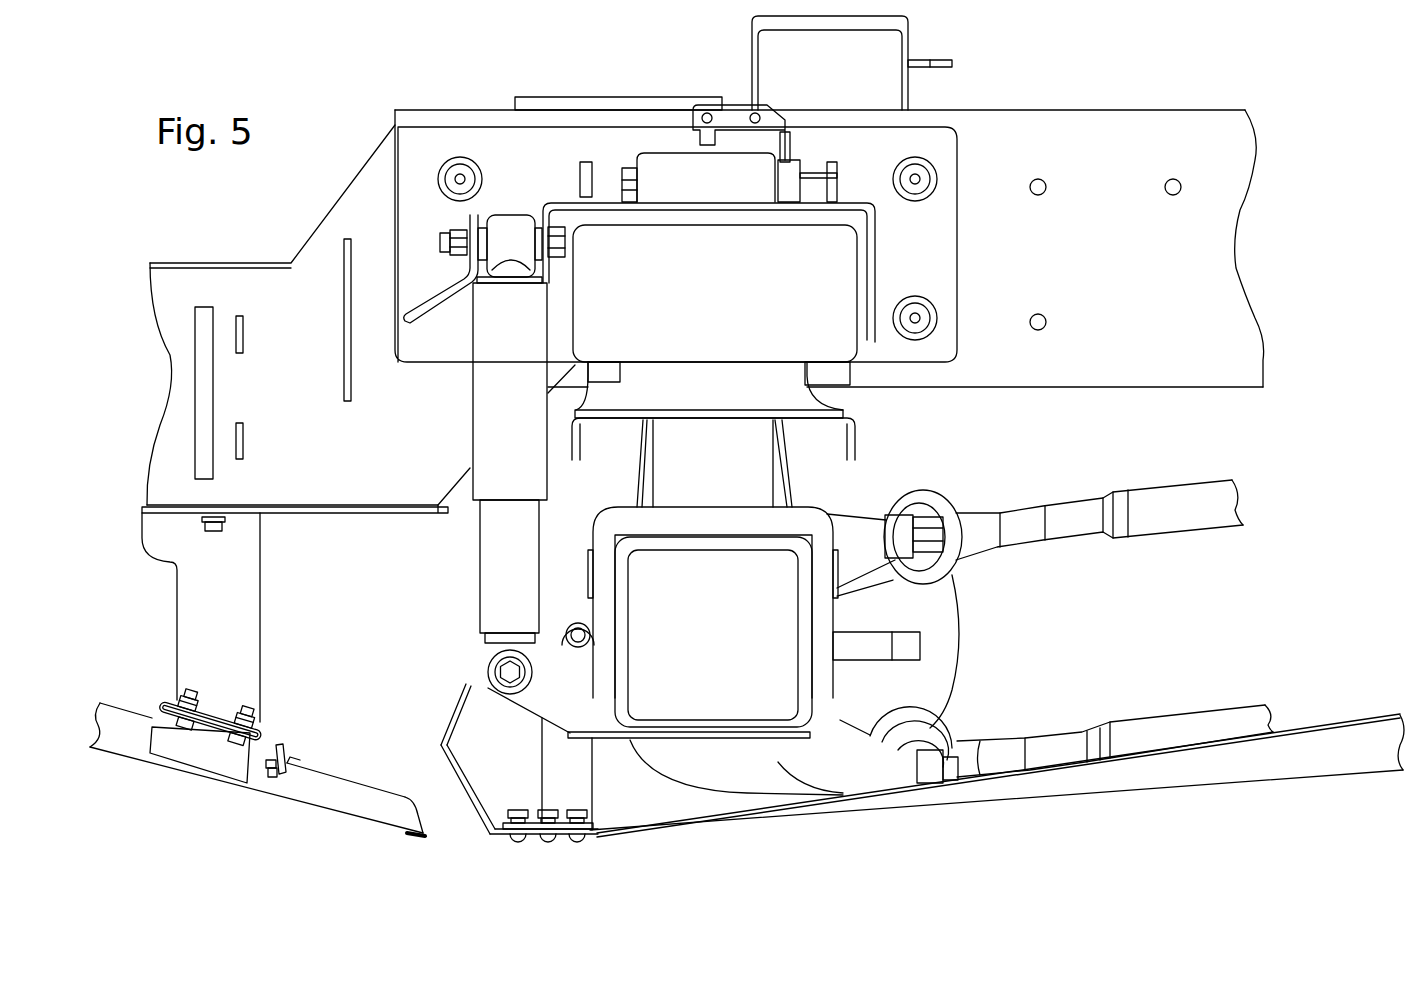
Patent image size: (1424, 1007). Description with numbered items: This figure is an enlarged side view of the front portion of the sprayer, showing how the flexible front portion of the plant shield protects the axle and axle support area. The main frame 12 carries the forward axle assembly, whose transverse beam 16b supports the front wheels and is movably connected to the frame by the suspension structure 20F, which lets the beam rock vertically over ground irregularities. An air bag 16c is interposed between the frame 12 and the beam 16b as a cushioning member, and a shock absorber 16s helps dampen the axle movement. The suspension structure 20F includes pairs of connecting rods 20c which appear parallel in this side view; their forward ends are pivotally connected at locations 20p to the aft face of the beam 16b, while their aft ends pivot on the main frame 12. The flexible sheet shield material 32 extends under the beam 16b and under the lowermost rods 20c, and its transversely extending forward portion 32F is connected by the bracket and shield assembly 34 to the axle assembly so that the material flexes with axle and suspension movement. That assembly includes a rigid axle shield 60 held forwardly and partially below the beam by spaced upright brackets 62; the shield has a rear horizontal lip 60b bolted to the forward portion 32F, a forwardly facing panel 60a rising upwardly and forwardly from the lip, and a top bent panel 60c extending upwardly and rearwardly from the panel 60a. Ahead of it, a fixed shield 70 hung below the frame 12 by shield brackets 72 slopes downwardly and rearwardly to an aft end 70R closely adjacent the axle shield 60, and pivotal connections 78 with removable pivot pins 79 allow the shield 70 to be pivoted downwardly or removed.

The main frame 12 is at (1112, 92).
The air bag 16c is at (723, 299).
The shock absorber 16s is at (483, 552).
The transverse beam 16b is at (722, 720).
The connecting rods 20c is at (1145, 722).
The pivotal connection locations 20p is at (927, 733).
The suspension structure 20F is at (1078, 790).
The flexible sheet shield material 32 is at (997, 790).
The forward portion of shield material 32F is at (660, 831).
The bracket and shield assembly 34 is at (463, 834).
The axle shield 60 is at (496, 768).
The forwardly facing panel 60a is at (460, 788).
The rear horizontal lip 60b is at (492, 838).
The top bent panel 60c is at (458, 726).
The upright brackets 62 is at (590, 788).
The fixed shield 70 is at (257, 779).
The aft end of fixed shield 70R is at (367, 823).
The shield brackets 72 is at (243, 611).
The pivotal connections 78 is at (163, 702).
The removable pivot pins 79 is at (283, 753).